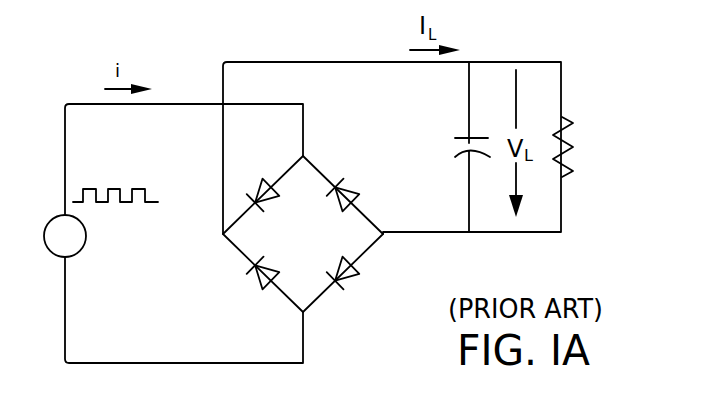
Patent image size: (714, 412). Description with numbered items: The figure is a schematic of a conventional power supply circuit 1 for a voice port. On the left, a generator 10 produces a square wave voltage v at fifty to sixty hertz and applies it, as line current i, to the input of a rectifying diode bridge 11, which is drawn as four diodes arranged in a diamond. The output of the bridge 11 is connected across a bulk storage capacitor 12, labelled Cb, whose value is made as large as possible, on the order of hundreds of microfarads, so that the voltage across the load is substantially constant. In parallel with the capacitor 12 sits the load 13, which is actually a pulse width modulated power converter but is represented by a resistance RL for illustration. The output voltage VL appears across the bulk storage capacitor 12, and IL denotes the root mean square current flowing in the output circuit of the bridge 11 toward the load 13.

The power supply circuit 1 is at (212, 50).
The generator 10 is at (47, 250).
The rectifying diode bridge 11 is at (312, 239).
The bulk storage capacitor 12 is at (458, 134).
The load 13 is at (570, 128).